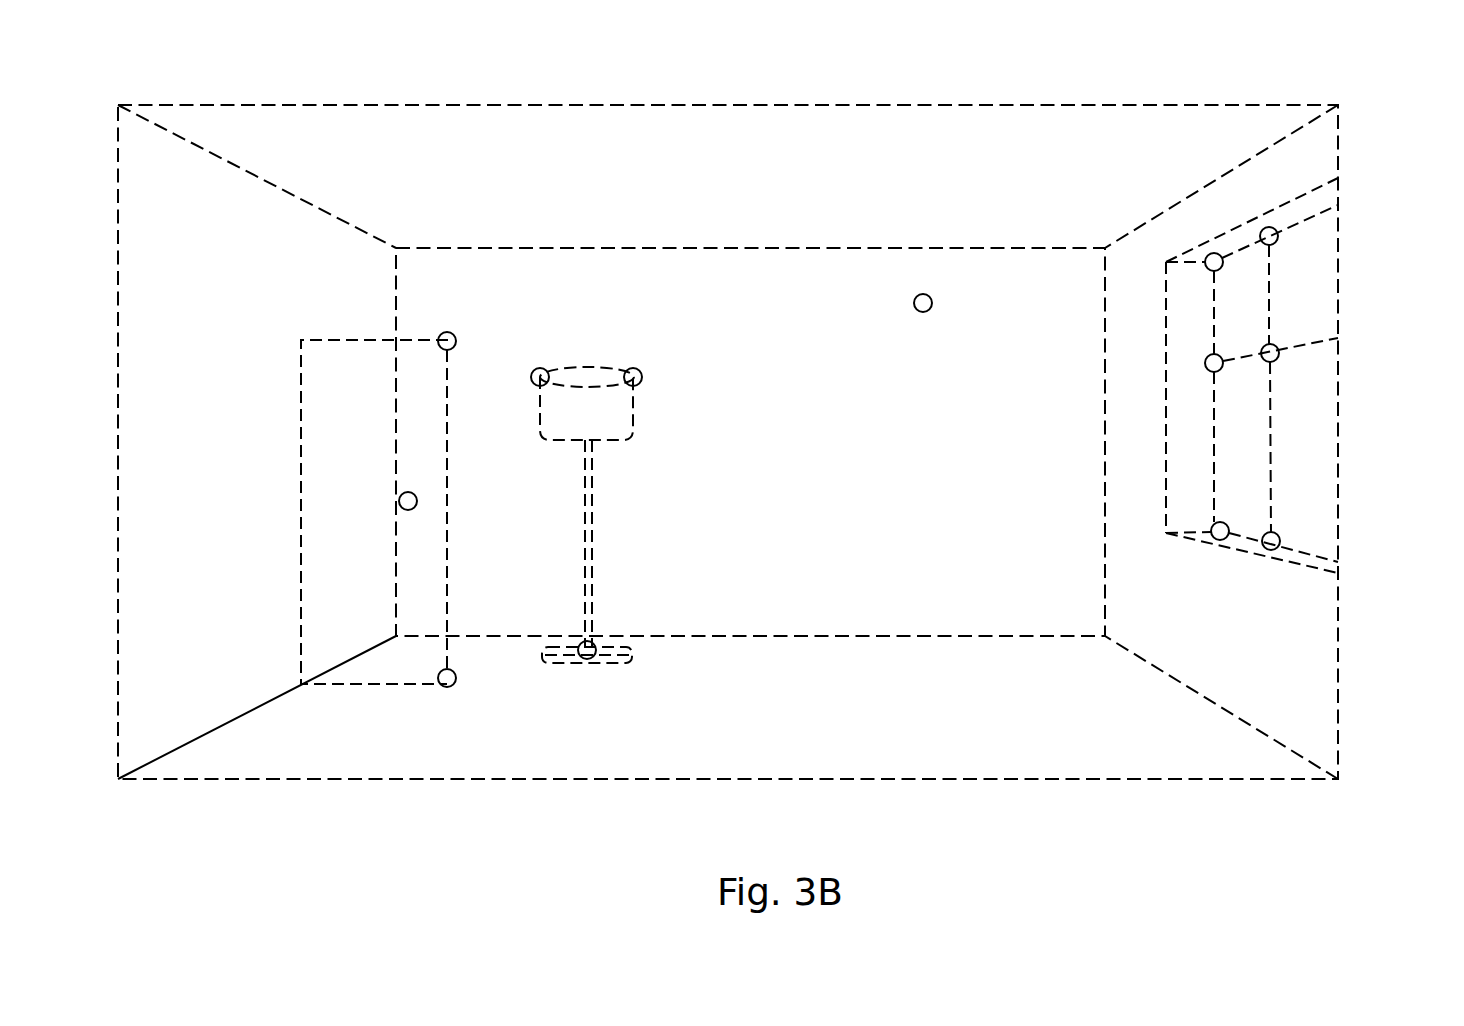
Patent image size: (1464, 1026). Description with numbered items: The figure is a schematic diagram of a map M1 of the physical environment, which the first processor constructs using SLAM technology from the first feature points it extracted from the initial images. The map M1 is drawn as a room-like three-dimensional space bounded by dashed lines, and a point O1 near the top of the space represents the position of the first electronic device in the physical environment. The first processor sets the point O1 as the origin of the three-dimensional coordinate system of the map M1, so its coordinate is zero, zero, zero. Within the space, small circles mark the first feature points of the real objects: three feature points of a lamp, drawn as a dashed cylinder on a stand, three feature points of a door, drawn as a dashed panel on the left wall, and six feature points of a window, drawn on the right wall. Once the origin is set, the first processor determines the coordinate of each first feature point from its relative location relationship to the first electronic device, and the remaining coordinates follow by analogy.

The map M1 is at (118, 52).
The point O1 is at (923, 294).